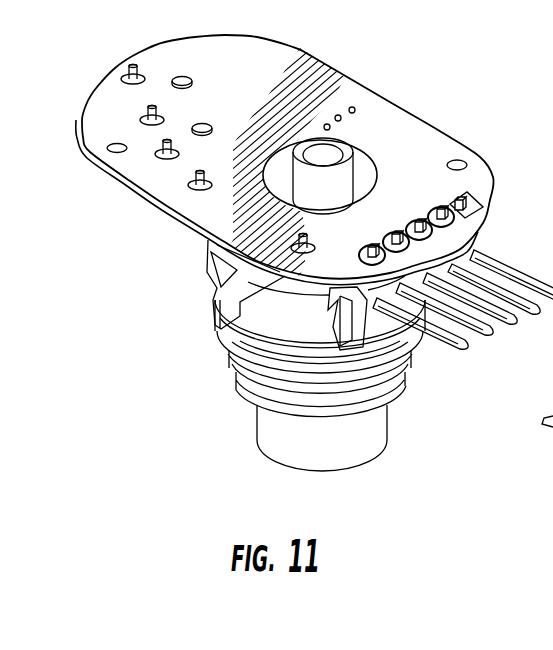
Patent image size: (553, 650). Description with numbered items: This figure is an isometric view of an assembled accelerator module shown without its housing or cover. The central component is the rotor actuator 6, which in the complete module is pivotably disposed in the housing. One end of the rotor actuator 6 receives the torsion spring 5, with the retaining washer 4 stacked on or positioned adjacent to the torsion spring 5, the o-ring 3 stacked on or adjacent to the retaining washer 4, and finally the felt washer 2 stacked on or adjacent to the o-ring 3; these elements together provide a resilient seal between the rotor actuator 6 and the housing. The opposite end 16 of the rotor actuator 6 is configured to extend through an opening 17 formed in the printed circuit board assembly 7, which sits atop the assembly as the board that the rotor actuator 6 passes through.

The felt washer 2 is at (400, 393).
The o-ring 3 is at (243, 391).
The retaining washer 4 is at (220, 348).
The torsion spring 5 is at (421, 357).
The rotor actuator 6 is at (370, 447).
The printed circuit (PC) board assembly 7 is at (325, 66).
The opposite end 16 is at (376, 173).
The opening 17 is at (379, 178).